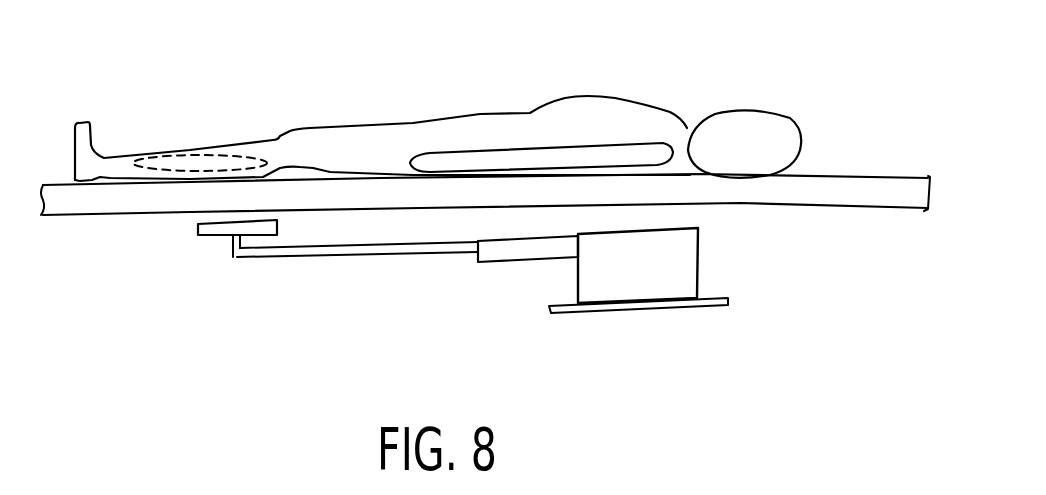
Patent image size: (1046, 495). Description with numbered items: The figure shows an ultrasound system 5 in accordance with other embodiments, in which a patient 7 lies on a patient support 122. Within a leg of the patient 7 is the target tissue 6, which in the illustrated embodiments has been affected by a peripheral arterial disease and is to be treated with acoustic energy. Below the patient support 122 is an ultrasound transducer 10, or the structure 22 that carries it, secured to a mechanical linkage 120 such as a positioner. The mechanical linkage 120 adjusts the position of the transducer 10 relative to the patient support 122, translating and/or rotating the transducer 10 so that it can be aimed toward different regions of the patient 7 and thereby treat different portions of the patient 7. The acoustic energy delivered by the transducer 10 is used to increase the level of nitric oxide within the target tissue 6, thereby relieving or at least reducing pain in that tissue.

The ultrasound system 5 is at (873, 77).
The target tissue 6 is at (230, 157).
The patient 7 is at (605, 103).
The ultrasound transducer 10 is at (208, 265).
The structure 22 is at (212, 235).
The mechanical linkage 120 is at (267, 293).
The patient support 122 is at (857, 203).